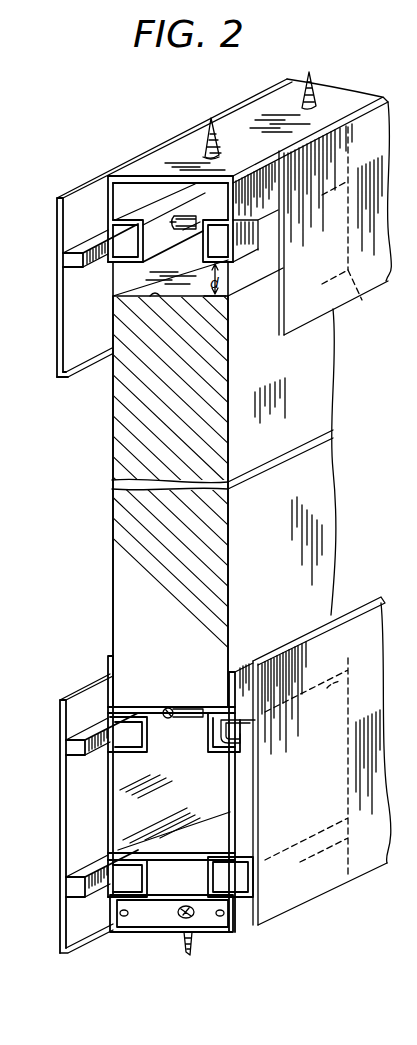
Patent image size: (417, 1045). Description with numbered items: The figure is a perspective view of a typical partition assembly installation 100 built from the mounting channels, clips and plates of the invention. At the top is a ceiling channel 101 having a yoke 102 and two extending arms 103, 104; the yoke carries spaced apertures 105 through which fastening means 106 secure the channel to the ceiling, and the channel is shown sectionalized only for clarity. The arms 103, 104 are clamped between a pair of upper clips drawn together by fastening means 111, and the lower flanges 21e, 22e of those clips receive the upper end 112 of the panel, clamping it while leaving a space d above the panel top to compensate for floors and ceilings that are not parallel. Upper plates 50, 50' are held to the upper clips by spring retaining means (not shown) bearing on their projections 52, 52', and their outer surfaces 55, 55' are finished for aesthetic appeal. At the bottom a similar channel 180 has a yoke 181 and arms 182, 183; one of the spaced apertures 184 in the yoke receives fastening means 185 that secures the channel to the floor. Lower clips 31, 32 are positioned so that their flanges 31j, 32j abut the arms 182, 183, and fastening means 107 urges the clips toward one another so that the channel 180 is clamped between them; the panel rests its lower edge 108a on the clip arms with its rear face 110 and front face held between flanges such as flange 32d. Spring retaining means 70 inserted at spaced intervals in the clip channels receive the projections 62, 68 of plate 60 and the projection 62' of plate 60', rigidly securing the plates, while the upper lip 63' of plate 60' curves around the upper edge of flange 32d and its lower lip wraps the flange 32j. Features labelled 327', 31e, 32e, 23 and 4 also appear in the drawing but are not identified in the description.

The partition assembly installation 100 is at (88, 536).
The rear face of panel 110 is at (118, 588).
The upper end of panel 112 is at (160, 297).
The lower edge of panel 108a is at (114, 660).
The plate 50 is at (126, 245).
The plate 50' is at (378, 297).
The plate projection 52 is at (81, 252).
The plate projection 52' is at (257, 253).
The lower flange 21e is at (108, 305).
The lower flange 22e is at (233, 337).
The surface of plate 55 is at (169, 228).
The surface of plate 55' is at (325, 216).
The ceiling channel 101 is at (207, 120).
The spaced apertures 105 is at (312, 76).
The yoke 102 is at (238, 127).
The extending arm 103 is at (150, 173).
The fastening means 106 is at (218, 142).
The extending arm 104 is at (224, 205).
The fastening means 111 is at (183, 231).
The upper lip 63' is at (364, 593).
The plate 60 is at (66, 813).
The plate 60' is at (328, 761).
The projection 62 is at (80, 739).
The projection 62' is at (273, 739).
The hidden channel lip 327' is at (349, 680).
The flange 32d is at (243, 660).
The spring retaining means 70 is at (213, 730).
The fastening means 107 is at (173, 714).
The clip 31 is at (110, 800).
The lower channel interior 31e is at (170, 810).
The clip 32 is at (247, 790).
The channel inner wall 32e is at (230, 788).
The flange 32j is at (247, 900).
The flange 31j is at (110, 905).
The projection 68 is at (97, 875).
The channel 180 is at (223, 938).
The yoke 181 is at (133, 932).
The extending arm 182 is at (123, 915).
The extending arm 183 is at (270, 917).
The spaced apertures 184 is at (182, 920).
The fastening means 185 is at (193, 952).
The panel 23 is at (408, 766).
The panel 4 is at (410, 823).